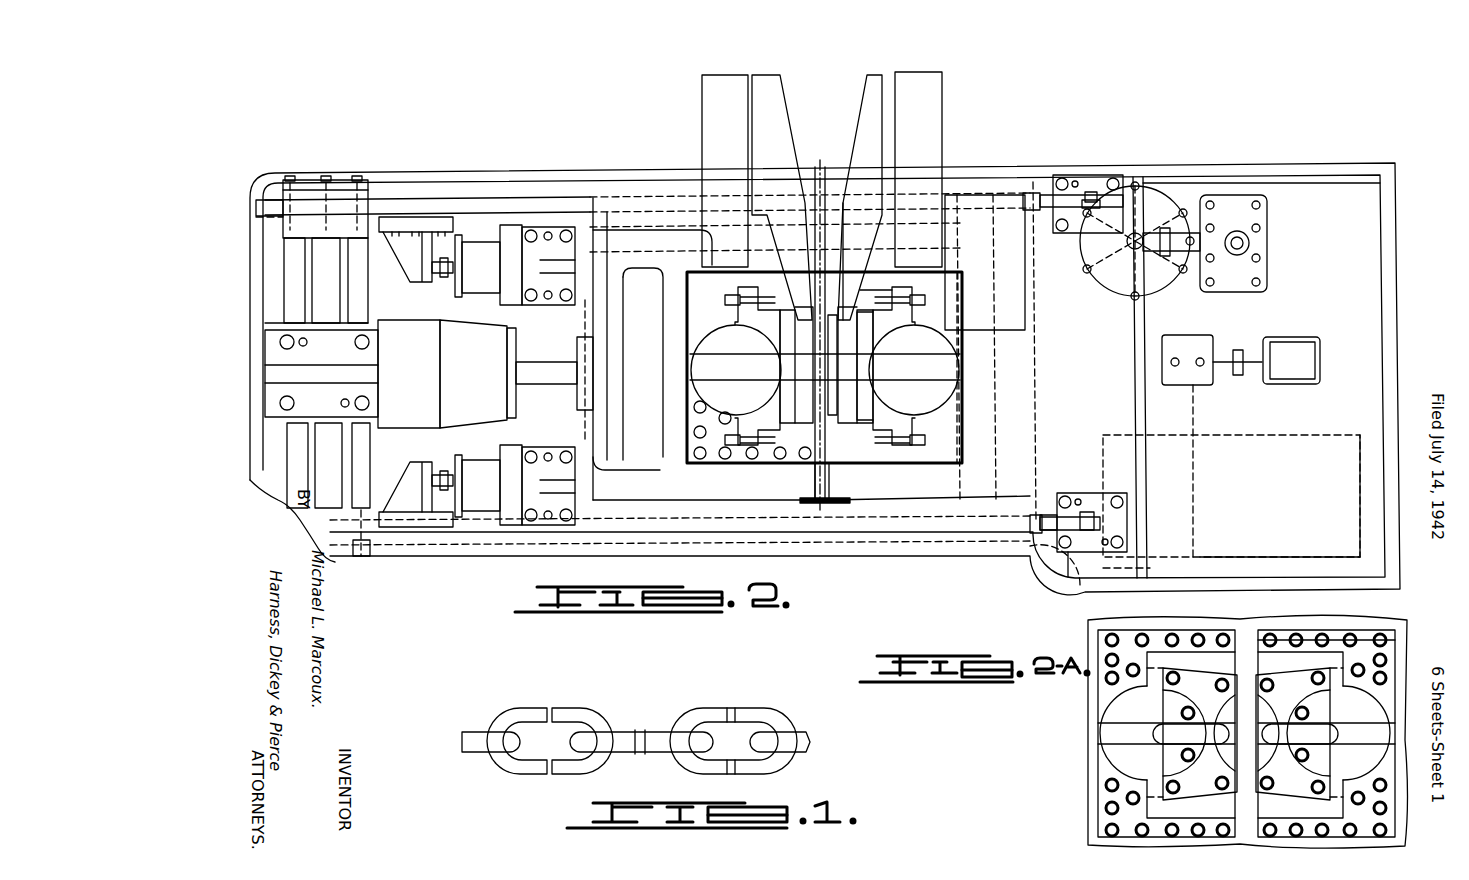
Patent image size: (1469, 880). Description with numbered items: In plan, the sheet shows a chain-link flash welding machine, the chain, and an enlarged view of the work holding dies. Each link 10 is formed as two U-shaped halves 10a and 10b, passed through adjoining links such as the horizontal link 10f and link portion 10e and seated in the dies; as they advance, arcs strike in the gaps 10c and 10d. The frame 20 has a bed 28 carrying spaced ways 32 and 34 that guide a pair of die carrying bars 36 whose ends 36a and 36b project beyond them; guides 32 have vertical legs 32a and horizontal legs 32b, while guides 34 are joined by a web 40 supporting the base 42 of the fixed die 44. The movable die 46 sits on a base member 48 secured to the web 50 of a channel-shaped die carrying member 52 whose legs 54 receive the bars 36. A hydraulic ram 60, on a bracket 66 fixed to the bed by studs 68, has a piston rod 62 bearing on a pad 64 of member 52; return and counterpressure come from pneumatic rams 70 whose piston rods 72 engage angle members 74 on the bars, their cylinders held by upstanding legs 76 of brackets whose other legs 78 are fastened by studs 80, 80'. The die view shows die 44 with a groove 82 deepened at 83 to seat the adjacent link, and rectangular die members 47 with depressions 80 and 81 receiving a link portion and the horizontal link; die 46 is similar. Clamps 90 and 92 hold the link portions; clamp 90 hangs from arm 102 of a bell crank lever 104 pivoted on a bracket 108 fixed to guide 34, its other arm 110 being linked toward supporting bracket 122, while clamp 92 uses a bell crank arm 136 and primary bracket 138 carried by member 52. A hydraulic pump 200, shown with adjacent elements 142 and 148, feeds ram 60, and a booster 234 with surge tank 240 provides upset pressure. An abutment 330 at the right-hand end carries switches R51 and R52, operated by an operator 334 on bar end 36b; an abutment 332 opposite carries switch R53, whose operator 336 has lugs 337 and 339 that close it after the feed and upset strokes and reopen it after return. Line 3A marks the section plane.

In FIG. 1, the links 10 is at (512, 708).
In FIG. 1, the U-shaped half 10a is at (528, 712).
In FIG. 1, the U-shaped half 10b is at (588, 715).
In FIG. 1, the gap 10c is at (555, 713).
In FIG. 1, the gap 10d is at (552, 780).
In FIG. 1, the link end 10e is at (470, 732).
In FIG. 1, the horizontally disposed link 10f is at (622, 732).
In FIG. 2, the frame 20 is at (1256, 165).
In FIG. 2, the bed 28 is at (1112, 348).
In FIG. 2, the ways 32 is at (316, 192).
In FIG. 2, the vertically extending legs 32a is at (302, 190).
In FIG. 2, the horizontally extending legs 32b is at (358, 305).
In FIG. 2, the ways 34 is at (888, 505).
In FIG. 2, the die carrying bars 36 is at (403, 205).
In FIG. 2, the bar end 36a is at (255, 200).
In FIG. 2, the bar end 36b is at (1030, 192).
In FIG. 2, the intermediate web portion 40 is at (995, 330).
In FIG. 2, the base 42 is at (950, 298).
In FIG. 2A, the base 42 is at (1298, 635).
In FIG. 2, the fixed die 44 is at (950, 392).
In FIG. 2A, the fixed die 44 is at (1325, 660).
In FIG. 2, the movable die 46 is at (700, 386).
In FIG. 2A, the movable die 46 is at (1123, 757).
In FIG. 2A, the rectangular die members 47 is at (1308, 668).
In FIG. 2, the supporting base member 48 is at (697, 320).
In FIG. 2A, the supporting base member 48 is at (1108, 650).
In FIG. 2, the web portion 50 is at (680, 266).
In FIG. 2, the die carrying member 52 is at (620, 185).
In FIG. 2, the vertically extending legs 54 is at (655, 195).
In FIG. 2, the operating ram 60 is at (425, 370).
In FIG. 2, the piston rod 62 is at (530, 385).
In FIG. 2, the pad 64 is at (576, 343).
In FIG. 2, the bracket 66 is at (382, 342).
In FIG. 2, the studs 68 is at (290, 346).
In FIG. 2, the pneumatic rams 70 is at (492, 272).
In FIG. 2, the piston rods 72 is at (442, 278).
In FIG. 2, the angle members 74 is at (408, 252).
In FIG. 2, the upstanding legs 76 is at (518, 226).
In FIG. 2, the legs 78 is at (548, 226).
In FIG. 2, the studs 80 is at (548, 265).
In FIG. 2A, the studs 80 is at (1234, 732).
In FIG. 2, the bolts 80' is at (549, 469).
In FIG. 2A, the arcuate depressions 81 is at (1318, 712).
In FIG. 2, the groove 82 is at (700, 362).
In FIG. 2A, the groove 82 is at (1108, 735).
In FIG. 2A, the depressed seat 83 is at (1305, 741).
In FIG. 2, the clamp 90 is at (848, 402).
In FIG. 2, the clamp 92 is at (798, 405).
In FIG. 2, the arm 102 is at (850, 340).
In FIG. 2, the bell crank lever 104 is at (875, 112).
In FIG. 2, the bracket 108 is at (1010, 258).
In FIG. 2, the arm 110 is at (858, 145).
In FIG. 2, the supporting bracket 122 is at (928, 104).
In FIG. 2, the bell crank arm 136 is at (712, 92).
In FIG. 2, the primary supporting bracket 138 is at (772, 87).
In FIG. 2, the motor 142 is at (1290, 340).
In FIG. 2, the control box 148 is at (1258, 448).
In FIG. 2, the hydraulic pump 200 is at (1215, 340).
In FIG. 2, the booster 234 is at (1172, 188).
In FIG. 2, the surge tank 240 is at (1270, 222).
In FIG. 2, the abutment 330 is at (1120, 520).
In FIG. 2, the abutment 332 is at (1075, 194).
In FIG. 2, the operator 334 is at (1057, 537).
In FIG. 2, the operator member 336 is at (1100, 183).
In FIG. 2, the operating lug 337 is at (1094, 190).
In FIG. 2, the operating lug 339 is at (1124, 200).
In FIG. 2, the section 3A is at (962, 188).
In FIG. 2, the switch RS1 R51 is at (1088, 510).
In FIG. 2, the switch RS2 R52 is at (1075, 530).
In FIG. 2, the switch RS3 R53 is at (1092, 197).